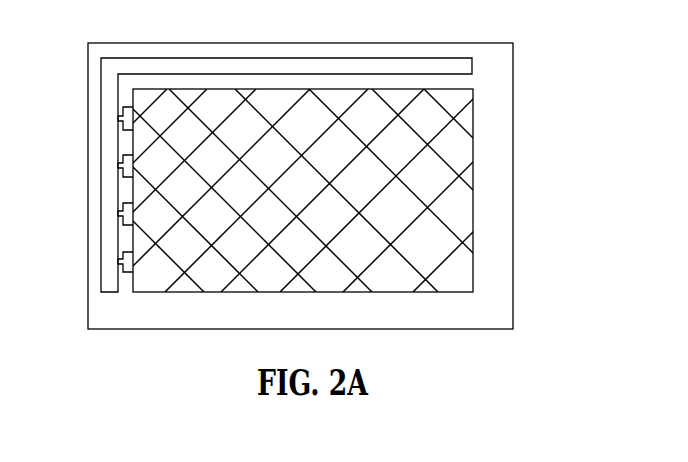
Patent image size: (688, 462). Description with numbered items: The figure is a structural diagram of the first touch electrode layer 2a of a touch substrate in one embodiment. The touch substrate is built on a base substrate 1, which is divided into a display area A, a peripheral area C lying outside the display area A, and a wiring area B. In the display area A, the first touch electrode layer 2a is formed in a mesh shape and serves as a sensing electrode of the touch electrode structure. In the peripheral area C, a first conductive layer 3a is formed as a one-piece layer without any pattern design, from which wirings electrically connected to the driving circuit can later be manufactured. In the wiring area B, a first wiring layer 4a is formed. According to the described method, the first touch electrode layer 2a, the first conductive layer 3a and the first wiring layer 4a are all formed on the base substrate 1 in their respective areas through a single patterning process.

The base substrate 1 is at (514, 108).
The first touch electrode layer 2a is at (157, 188).
The first conductive layer 3a is at (315, 68).
The first wiring layer 4a is at (121, 120).
The display area A is at (458, 158).
The wiring area B is at (121, 140).
The peripheral area C is at (400, 48).